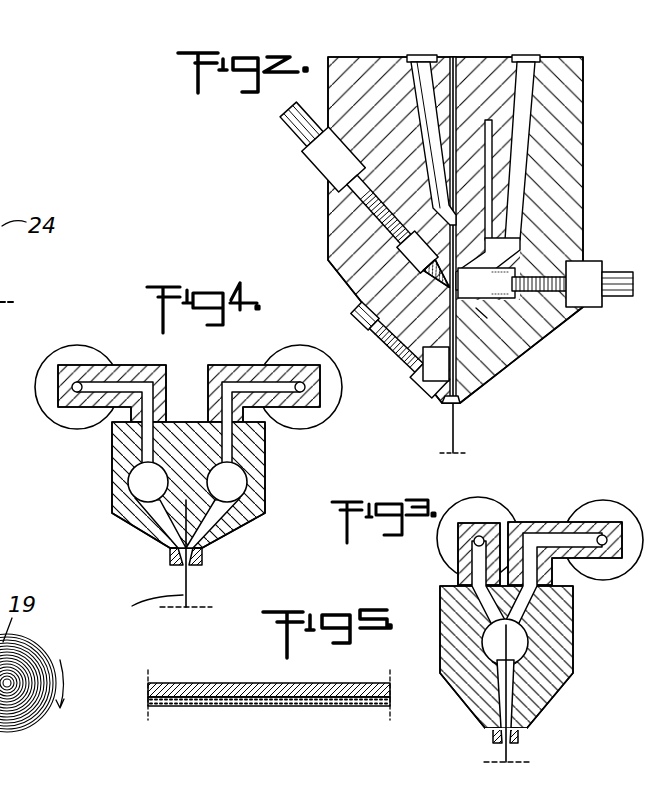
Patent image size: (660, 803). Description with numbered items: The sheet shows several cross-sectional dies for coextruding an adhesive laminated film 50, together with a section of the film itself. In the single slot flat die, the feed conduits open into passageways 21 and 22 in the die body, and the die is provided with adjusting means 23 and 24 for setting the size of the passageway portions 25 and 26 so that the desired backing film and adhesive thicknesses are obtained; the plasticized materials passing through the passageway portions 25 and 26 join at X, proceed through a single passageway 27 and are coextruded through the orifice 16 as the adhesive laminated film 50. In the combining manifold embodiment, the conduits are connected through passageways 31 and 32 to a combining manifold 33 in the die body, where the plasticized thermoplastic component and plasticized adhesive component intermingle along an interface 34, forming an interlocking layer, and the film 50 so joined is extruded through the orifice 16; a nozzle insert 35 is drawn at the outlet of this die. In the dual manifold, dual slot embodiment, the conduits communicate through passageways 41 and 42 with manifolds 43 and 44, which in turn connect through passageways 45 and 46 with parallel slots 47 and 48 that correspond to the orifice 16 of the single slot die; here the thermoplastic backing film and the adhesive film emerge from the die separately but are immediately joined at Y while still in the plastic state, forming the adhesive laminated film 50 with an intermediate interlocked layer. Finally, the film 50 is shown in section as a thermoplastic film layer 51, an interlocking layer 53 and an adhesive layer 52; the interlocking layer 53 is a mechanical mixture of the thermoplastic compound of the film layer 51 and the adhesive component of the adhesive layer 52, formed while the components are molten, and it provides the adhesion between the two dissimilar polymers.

In FIG. 2, the orifice 16 is at (460, 405).
In FIG. 3, the orifice 16 is at (514, 743).
In FIG. 2, the passageway 21 is at (421, 90).
In FIG. 2, the passageway 22 is at (528, 100).
In FIG. 2, the adjusting means 23 is at (323, 173).
In FIG. 2, the adjusting means 24 is at (596, 262).
In FIG. 2, the passageway portion 25 is at (438, 268).
In FIG. 2, the passageway portion 26 is at (500, 250).
In FIG. 2, the single passageway 27 is at (447, 365).
In FIG. 3, the passageway 31 is at (503, 522).
In FIG. 3, the passageway 32 is at (545, 522).
In FIG. 3, the combining manifold 33 is at (525, 640).
In FIG. 3, the interface 34 is at (517, 662).
In FIG. 3, the nozzle insert 35 is at (535, 703).
In FIG. 4, the passageway 41 is at (147, 446).
In FIG. 4, the passageway 42 is at (232, 450).
In FIG. 4, the manifold 43 is at (140, 481).
In FIG. 4, the manifold 44 is at (235, 484).
In FIG. 4, the passageway 45 is at (170, 522).
In FIG. 4, the passageway 46 is at (230, 528).
In FIG. 4, the parallel slot 47 is at (178, 560).
In FIG. 4, the parallel slot 48 is at (200, 565).
In FIG. 2, the adhesive laminated film 50 is at (451, 428).
In FIG. 4, the adhesive laminated film 50 is at (190, 597).
In FIG. 3, the adhesive laminated film 50 is at (502, 750).
In FIG. 5, the adhesive laminated film 50 is at (181, 716).
In FIG. 5, the thermoplastic film layer 51 is at (210, 688).
In FIG. 5, the adhesive layer 52 is at (272, 705).
In FIG. 5, the interlocking layer 53 is at (244, 692).